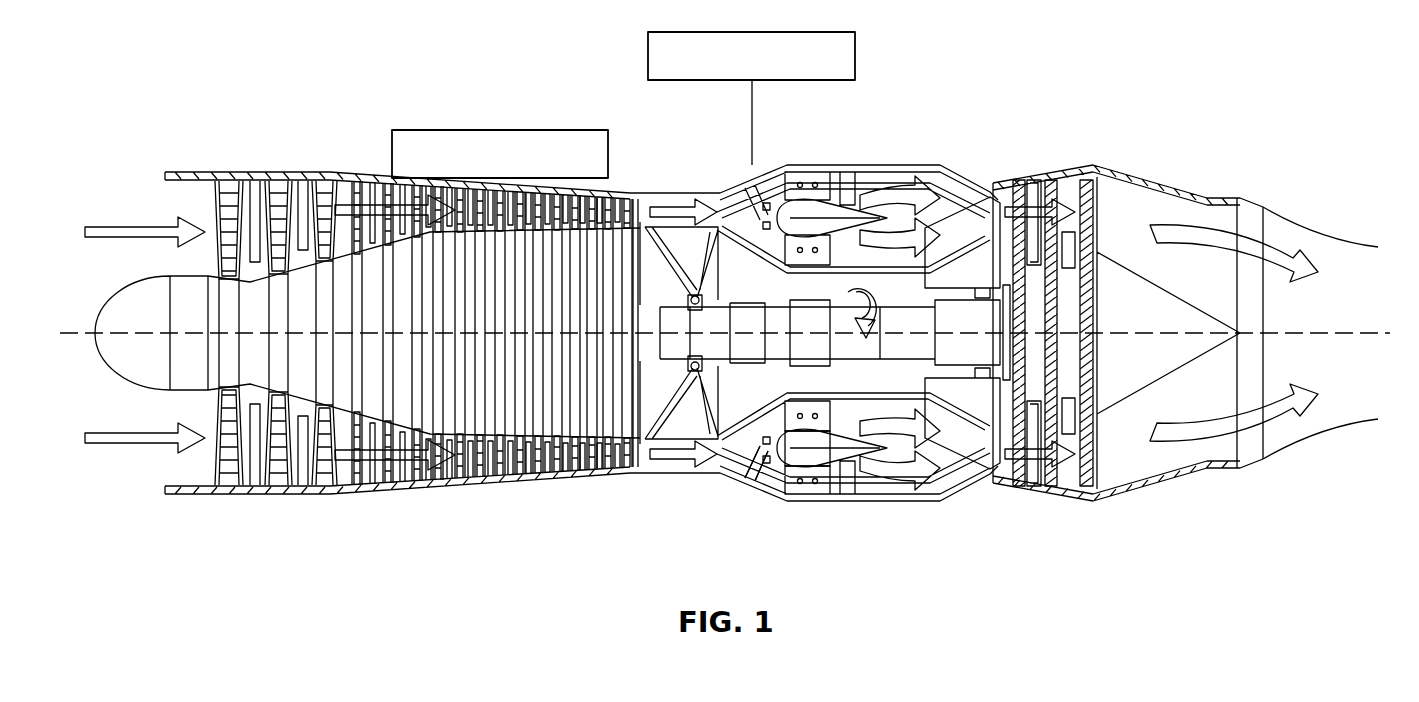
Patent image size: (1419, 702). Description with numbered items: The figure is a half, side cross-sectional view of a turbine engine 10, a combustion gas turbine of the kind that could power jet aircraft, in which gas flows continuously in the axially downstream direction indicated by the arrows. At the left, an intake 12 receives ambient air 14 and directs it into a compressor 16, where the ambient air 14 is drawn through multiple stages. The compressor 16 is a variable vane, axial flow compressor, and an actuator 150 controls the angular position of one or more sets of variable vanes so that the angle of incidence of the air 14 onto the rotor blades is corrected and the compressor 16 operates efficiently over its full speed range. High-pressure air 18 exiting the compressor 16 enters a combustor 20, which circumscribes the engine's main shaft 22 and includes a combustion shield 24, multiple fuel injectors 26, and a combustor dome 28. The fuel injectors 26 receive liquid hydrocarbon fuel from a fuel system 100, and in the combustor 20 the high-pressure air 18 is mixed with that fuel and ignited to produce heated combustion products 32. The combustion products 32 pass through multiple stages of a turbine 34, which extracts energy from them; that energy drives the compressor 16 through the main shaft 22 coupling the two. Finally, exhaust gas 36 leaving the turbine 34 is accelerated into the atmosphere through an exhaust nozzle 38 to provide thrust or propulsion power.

The turbine engine 10 is at (182, 66).
The intake 12 is at (185, 172).
The ambient air 14 is at (143, 222).
The compressor 16 is at (318, 166).
The high-pressure air 18 is at (675, 211).
The combustor 20 is at (861, 158).
The main shaft 22 is at (835, 332).
The combustion shield 24 is at (963, 467).
The fuel injectors 26 is at (765, 465).
The combustor dome 28 is at (772, 468).
The combustion products 32 is at (1023, 208).
The turbine 34 is at (1041, 168).
The exhaust gas 36 is at (1270, 267).
The exhaust nozzle 38 is at (1255, 462).
The fuel system 100 is at (705, 30).
The actuator 150 is at (505, 130).